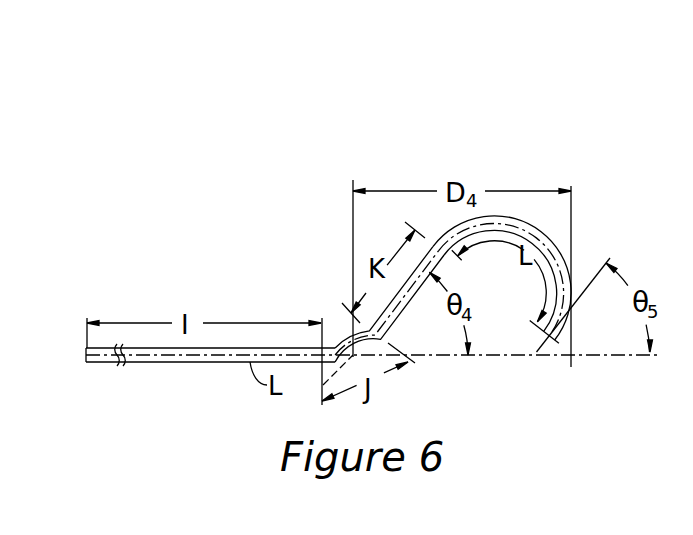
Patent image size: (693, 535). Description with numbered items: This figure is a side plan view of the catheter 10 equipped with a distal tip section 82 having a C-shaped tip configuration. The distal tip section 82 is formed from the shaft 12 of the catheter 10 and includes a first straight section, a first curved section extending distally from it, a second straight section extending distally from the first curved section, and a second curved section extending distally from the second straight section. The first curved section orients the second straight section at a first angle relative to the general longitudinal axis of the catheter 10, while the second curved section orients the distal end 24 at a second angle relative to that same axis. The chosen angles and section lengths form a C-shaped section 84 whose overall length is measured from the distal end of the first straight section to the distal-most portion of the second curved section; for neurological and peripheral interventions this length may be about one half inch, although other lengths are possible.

The catheter 10 is at (186, 215).
The shaft 12 is at (187, 363).
The distal tip section 82 is at (312, 233).
The C-shaped section 84 is at (566, 240).
The distal end 24 is at (548, 347).